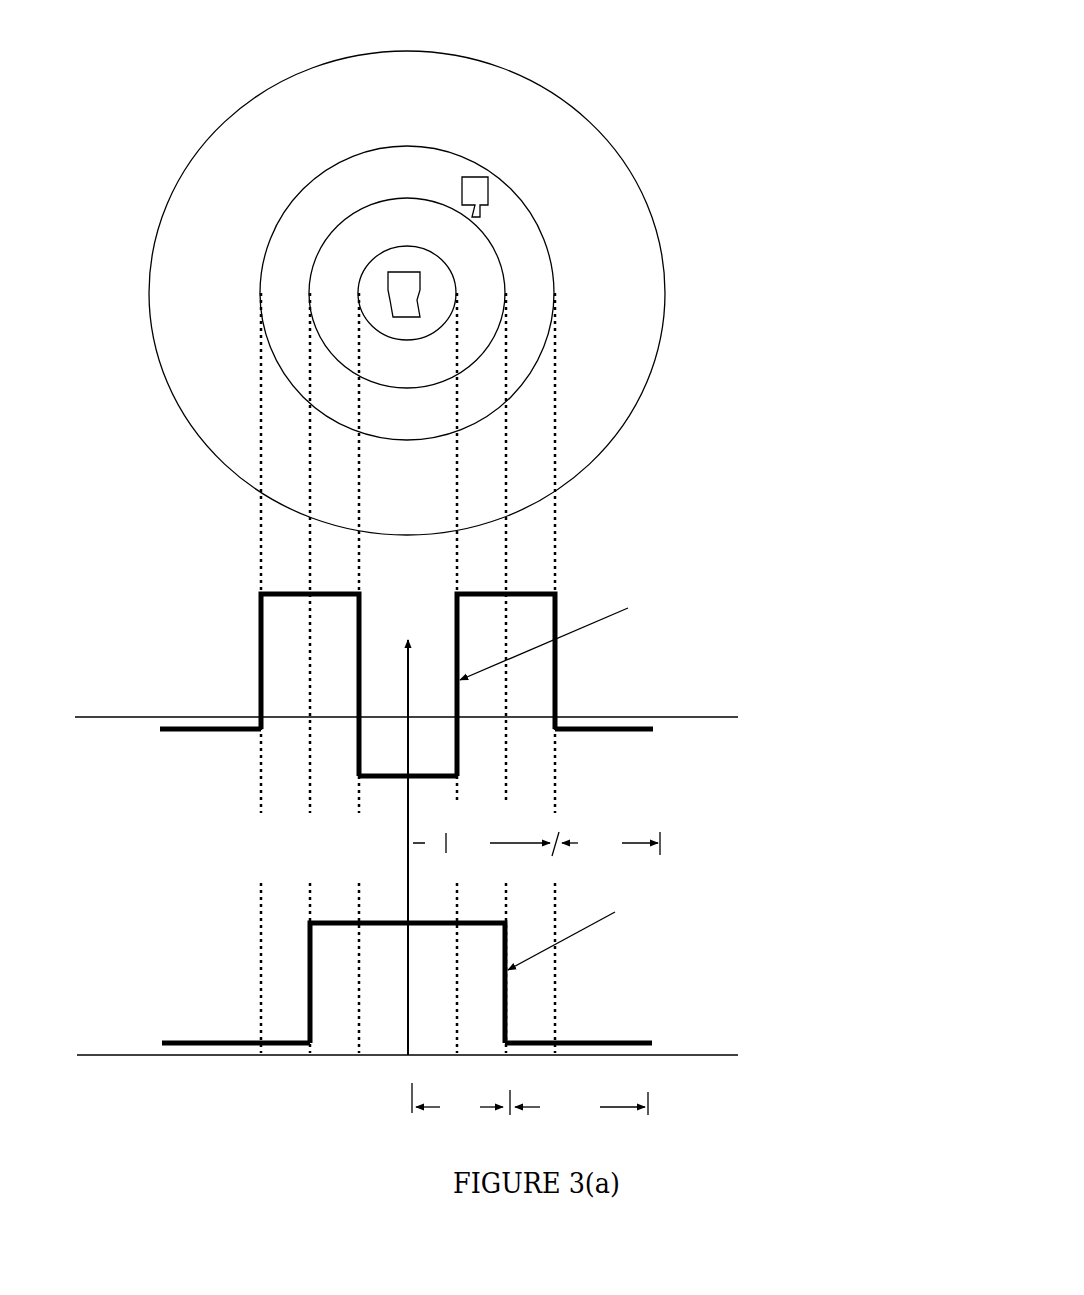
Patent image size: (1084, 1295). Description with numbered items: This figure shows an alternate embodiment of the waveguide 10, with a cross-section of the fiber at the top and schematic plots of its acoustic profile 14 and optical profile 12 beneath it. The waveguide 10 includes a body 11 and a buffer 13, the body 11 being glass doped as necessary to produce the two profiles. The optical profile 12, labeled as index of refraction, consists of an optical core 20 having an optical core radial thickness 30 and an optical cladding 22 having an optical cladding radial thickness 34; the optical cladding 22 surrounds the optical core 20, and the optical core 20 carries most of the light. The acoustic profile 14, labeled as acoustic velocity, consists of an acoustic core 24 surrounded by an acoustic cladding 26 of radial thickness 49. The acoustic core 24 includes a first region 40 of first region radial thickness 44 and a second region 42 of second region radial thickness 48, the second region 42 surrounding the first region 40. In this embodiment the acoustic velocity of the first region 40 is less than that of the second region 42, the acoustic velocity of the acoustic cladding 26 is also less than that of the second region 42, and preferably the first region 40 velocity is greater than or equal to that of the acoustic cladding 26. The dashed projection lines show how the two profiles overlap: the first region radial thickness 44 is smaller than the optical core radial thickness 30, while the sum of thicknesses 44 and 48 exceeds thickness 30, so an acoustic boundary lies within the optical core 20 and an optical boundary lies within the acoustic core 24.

The waveguide 10 is at (713, 143).
The body 11 is at (460, 90).
The buffer 13 is at (597, 80).
The optical profile 12 is at (507, 993).
The acoustic profile 14 is at (497, 804).
The optical core 20 is at (305, 963).
The optical cladding 22 is at (222, 1033).
The acoustic core 24 is at (372, 570).
The acoustic cladding 26 is at (183, 702).
The optical core radial thickness 30 is at (457, 1102).
The optical cladding radial thickness 34 is at (579, 1105).
The first region 40 is at (392, 758).
The second region 42 is at (282, 632).
The first region radial thickness 44 is at (429, 844).
The second region radial thickness 48 is at (507, 844).
The radial thickness 49 is at (611, 844).